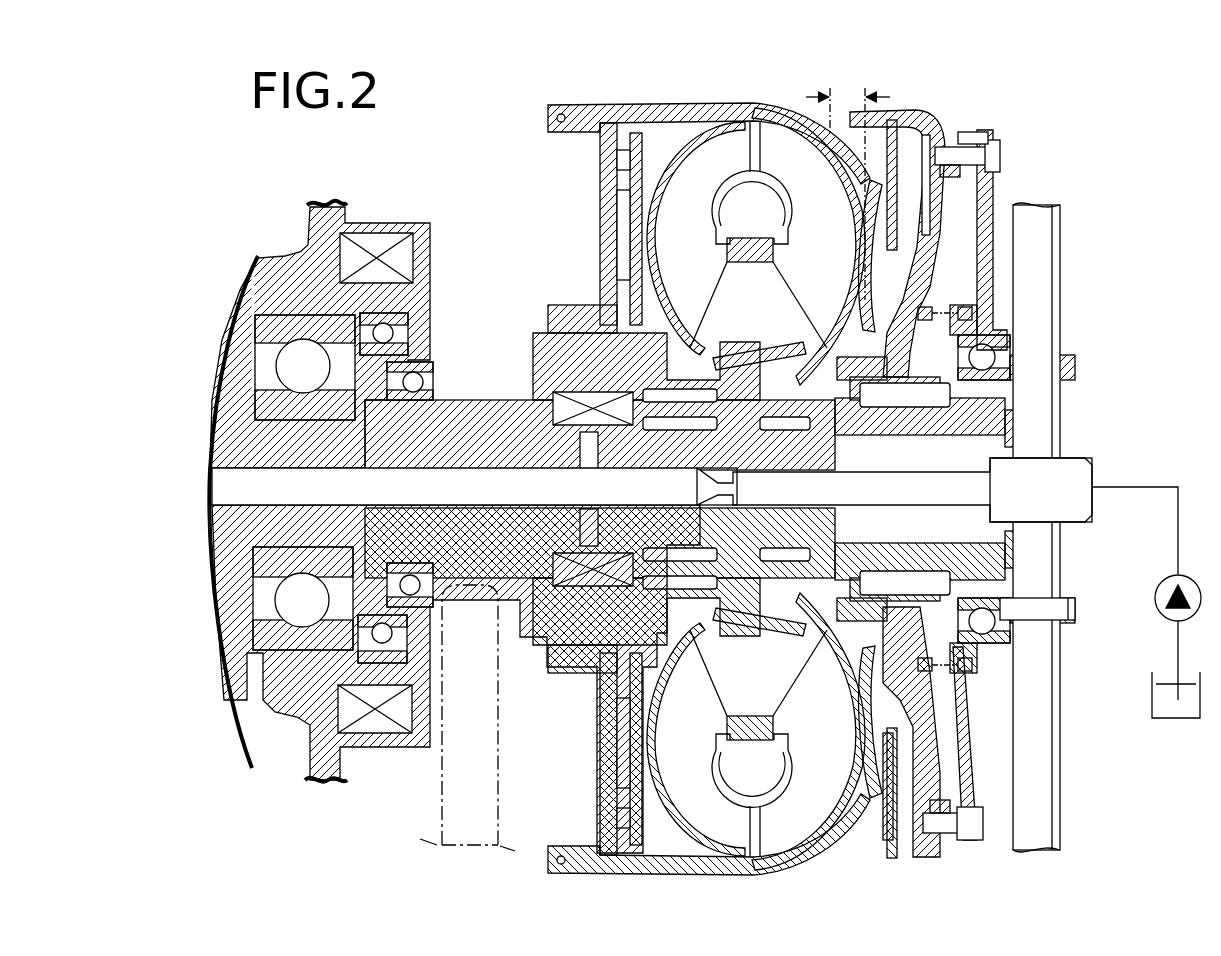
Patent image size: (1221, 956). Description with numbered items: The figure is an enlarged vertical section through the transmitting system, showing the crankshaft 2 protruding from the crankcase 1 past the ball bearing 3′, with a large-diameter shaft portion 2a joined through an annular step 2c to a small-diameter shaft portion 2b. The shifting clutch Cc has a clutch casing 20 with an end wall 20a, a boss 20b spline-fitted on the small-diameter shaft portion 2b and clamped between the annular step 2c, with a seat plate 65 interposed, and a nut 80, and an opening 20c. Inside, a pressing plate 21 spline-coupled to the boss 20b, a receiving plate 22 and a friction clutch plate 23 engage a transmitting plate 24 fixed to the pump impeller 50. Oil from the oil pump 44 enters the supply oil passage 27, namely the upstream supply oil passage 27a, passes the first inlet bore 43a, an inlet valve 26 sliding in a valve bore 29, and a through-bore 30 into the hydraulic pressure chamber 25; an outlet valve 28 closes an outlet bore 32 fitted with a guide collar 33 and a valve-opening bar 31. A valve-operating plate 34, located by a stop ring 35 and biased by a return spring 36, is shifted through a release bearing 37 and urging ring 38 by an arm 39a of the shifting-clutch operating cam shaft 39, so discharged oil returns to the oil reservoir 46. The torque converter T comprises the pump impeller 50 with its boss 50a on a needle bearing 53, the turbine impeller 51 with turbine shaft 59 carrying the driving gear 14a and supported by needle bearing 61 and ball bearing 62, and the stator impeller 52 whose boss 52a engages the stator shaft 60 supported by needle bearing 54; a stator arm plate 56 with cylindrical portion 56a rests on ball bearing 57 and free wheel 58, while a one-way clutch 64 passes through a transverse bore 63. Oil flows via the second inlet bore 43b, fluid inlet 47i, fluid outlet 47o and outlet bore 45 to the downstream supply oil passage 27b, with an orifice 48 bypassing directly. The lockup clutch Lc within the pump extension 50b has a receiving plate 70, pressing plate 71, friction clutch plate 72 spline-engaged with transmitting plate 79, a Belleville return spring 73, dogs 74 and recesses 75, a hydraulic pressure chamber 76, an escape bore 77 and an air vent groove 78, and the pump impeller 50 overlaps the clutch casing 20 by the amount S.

The crankcase 1 is at (318, 210).
The crankshaft 2 is at (203, 534).
The large-diameter shaft portion 2a is at (527, 600).
The small-diameter shaft portion 2b is at (828, 660).
The annular step 2c is at (828, 440).
The ball bearing 3′ is at (300, 368).
The driving gear 14a is at (468, 598).
The clutch casing 20 is at (912, 118).
The end wall 20a is at (940, 224).
The boss 20b is at (932, 440).
The opening 20c is at (835, 118).
The pressing plate 21 is at (912, 268).
The receiving plate 22 is at (880, 143).
The friction clutch plate 23 is at (876, 225).
The transmitting plate 24 is at (868, 252).
The hydraulic pressure chamber 25 is at (995, 137).
The inlet valve 26 is at (950, 325).
The oil passage 27 is at (1178, 516).
The upstream supply oil passage 27a is at (1052, 497).
The downstream supply oil passage 27b is at (290, 497).
The outlet valve 28 is at (888, 185).
The valve bore 29 is at (860, 360).
The through-bore 30 is at (845, 458).
The valve-opening bar 31 is at (968, 157).
The outlet bore 32 is at (970, 174).
The guide collar 33 is at (975, 170).
The valve-operating plate 34 is at (993, 255).
The stop ring 35 is at (1000, 398).
The return spring 36 is at (972, 313).
The release bearing 37 is at (996, 352).
The urging ring 38 is at (1040, 360).
The shifting-clutch operating cam shaft 39 is at (1060, 270).
The arm 39a is at (1075, 609).
The first inlet bore 43a is at (893, 457).
The second inlet bore 43b is at (760, 520).
The oil pump 44 is at (1158, 592).
The outlet bore 45 is at (576, 445).
The oil reservoir 46 is at (1165, 720).
The fluid outlet 47o is at (648, 405).
The fluid inlet 47i is at (680, 668).
The orifice 48 is at (720, 492).
The pump impeller 50 is at (800, 125).
The boss 50a is at (768, 625).
The pump extension 50b is at (690, 135).
The turbine impeller 51 is at (704, 132).
The stator impeller 52 is at (750, 240).
The boss 52a is at (730, 640).
The needle bearing 53 is at (782, 447).
The needle bearing 54 is at (735, 432).
The stator arm plate 56 is at (425, 228).
The cylindrical portion 56a is at (358, 418).
The ball bearing 57 is at (378, 330).
The free wheel 58 is at (376, 237).
The turbine shaft 59 is at (470, 448).
The stator shaft 60 is at (584, 458).
The needle bearing 61 is at (702, 400).
The ball bearing 62 is at (418, 380).
The transverse bore 63 is at (522, 448).
The one-way clutch 64 is at (640, 440).
The seat plate 65 is at (815, 395).
The receiving plate 70 is at (548, 126).
The pressing plate 71 is at (645, 300).
The friction clutch plate 72 is at (612, 158).
The Belleville return spring 73 is at (590, 316).
The dogs 74 is at (616, 262).
The recesses 75 is at (620, 235).
The hydraulic pressure chamber 76 is at (655, 205).
The escape bore 77 is at (615, 178).
The air vent groove 78 is at (534, 333).
The transmitting plate 79 is at (662, 170).
The nut 80 is at (1030, 430).
The torque converter T is at (724, 102).
The lockup clutch Lc is at (546, 205).
The shifting clutch Cc is at (962, 130).
The overlap amount S is at (865, 97).